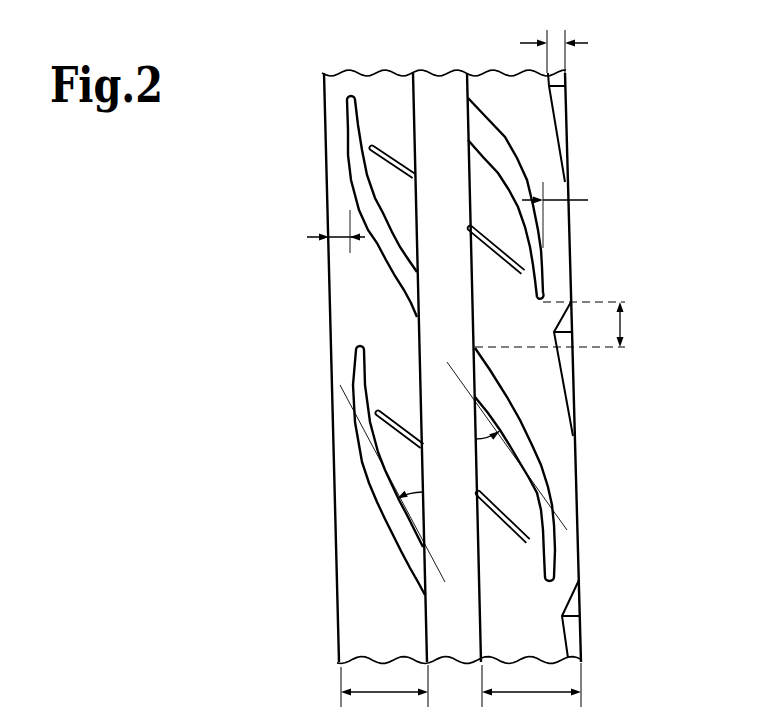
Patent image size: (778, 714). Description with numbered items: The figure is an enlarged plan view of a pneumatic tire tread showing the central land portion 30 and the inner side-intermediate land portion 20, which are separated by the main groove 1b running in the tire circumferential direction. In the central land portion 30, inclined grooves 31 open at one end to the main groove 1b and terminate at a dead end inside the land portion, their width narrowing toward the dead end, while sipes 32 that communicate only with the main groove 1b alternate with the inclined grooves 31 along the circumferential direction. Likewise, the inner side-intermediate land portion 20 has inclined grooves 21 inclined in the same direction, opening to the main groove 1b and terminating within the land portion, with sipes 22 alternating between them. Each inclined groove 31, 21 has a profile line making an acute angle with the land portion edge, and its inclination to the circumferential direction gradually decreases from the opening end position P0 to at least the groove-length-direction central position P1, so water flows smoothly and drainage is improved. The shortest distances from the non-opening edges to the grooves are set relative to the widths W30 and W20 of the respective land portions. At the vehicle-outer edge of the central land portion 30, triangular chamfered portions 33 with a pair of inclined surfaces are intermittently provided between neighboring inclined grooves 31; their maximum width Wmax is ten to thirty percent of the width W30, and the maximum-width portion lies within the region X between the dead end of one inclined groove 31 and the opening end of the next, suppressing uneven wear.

The main groove 1b is at (447, 95).
The inner side-intermediate land portion 20 is at (394, 73).
The inclined groove 21 is at (382, 257).
The sipe 22 is at (373, 146).
The central land portion 30 is at (502, 73).
The inclined groove 31 is at (510, 163).
The sipe 32 is at (512, 256).
The chamfered portion 33 is at (557, 103).
The maximum width of the chamfered portion Wmax is at (592, 51).
The width of the inner side-intermediate land portion W20 is at (384, 689).
The width of the central land portion W30 is at (531, 688).
The region X is at (559, 325).
The opening end position P0 is at (475, 397).
The groove-length-direction central position P1 is at (377, 450).